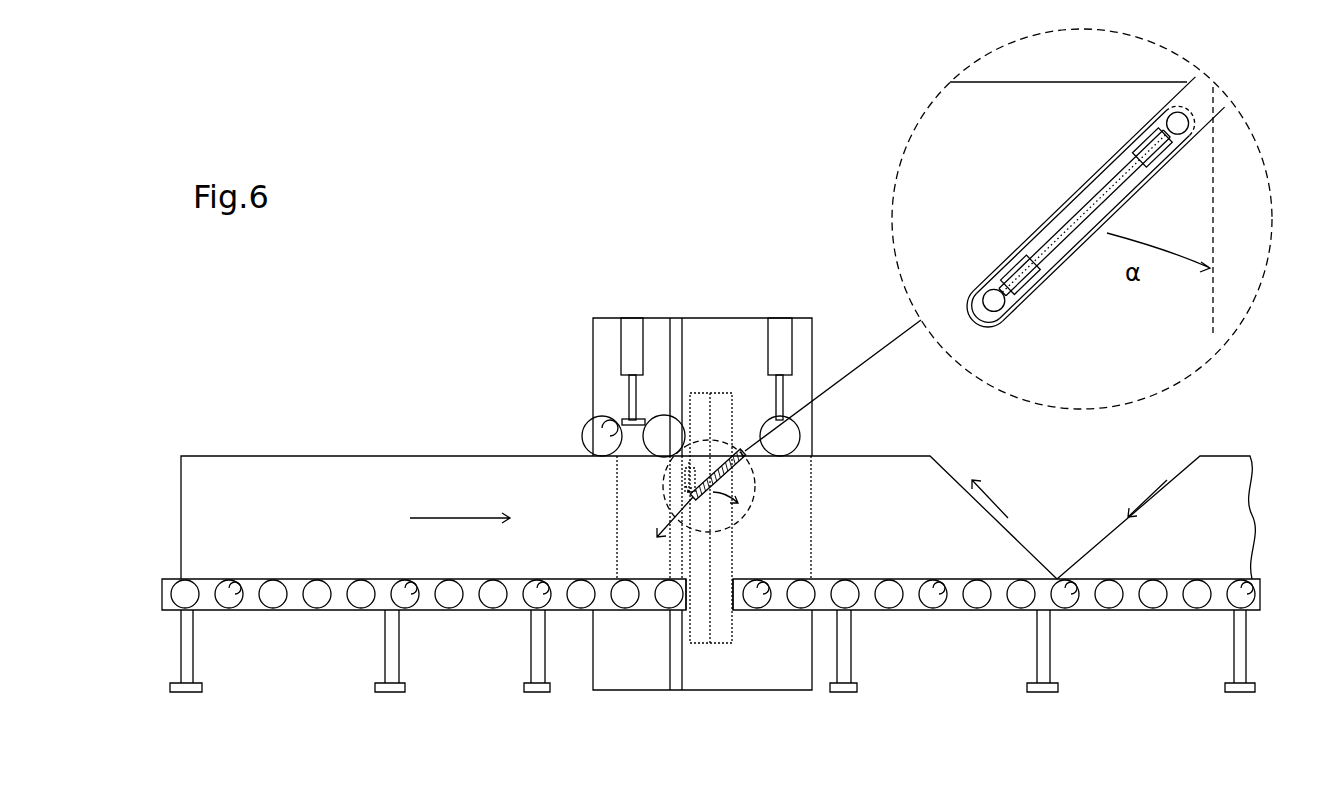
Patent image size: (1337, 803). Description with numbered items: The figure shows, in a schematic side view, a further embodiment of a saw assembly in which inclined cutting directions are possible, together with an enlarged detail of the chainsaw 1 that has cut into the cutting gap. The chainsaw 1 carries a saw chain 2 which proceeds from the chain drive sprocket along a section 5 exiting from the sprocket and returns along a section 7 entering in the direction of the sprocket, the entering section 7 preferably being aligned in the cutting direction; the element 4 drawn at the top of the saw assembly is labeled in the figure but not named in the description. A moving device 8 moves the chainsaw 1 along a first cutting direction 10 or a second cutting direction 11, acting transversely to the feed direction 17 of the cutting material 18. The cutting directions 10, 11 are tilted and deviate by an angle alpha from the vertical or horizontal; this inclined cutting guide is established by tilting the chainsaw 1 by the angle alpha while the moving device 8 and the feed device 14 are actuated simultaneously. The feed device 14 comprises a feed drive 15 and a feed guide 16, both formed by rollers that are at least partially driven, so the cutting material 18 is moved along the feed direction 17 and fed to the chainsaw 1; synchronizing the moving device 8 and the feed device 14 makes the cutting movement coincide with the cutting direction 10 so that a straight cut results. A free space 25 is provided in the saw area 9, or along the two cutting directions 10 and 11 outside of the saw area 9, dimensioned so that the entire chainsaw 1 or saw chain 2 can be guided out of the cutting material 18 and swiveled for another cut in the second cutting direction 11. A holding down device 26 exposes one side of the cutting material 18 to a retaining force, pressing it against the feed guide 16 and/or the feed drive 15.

The chainsaw 1 is at (683, 487).
The saw chain 2 is at (972, 313).
The lifting cylinder 4 is at (727, 440).
The section exiting from the chain drive sprocket 5 is at (1192, 122).
The section entering in the direction of the chain drive sprocket 7 is at (978, 293).
The moving device 8 is at (724, 335).
The saw area 9 is at (712, 612).
The first cutting direction 10 is at (1143, 500).
The second cutting direction 11 is at (990, 500).
The feed device 14 is at (420, 645).
The feed drive 15 is at (537, 613).
The feed guide 16 is at (537, 613).
The feed direction 17 is at (460, 517).
The cutting material 18 is at (297, 480).
The free space 25 is at (702, 393).
The holding down device 26 is at (632, 338).